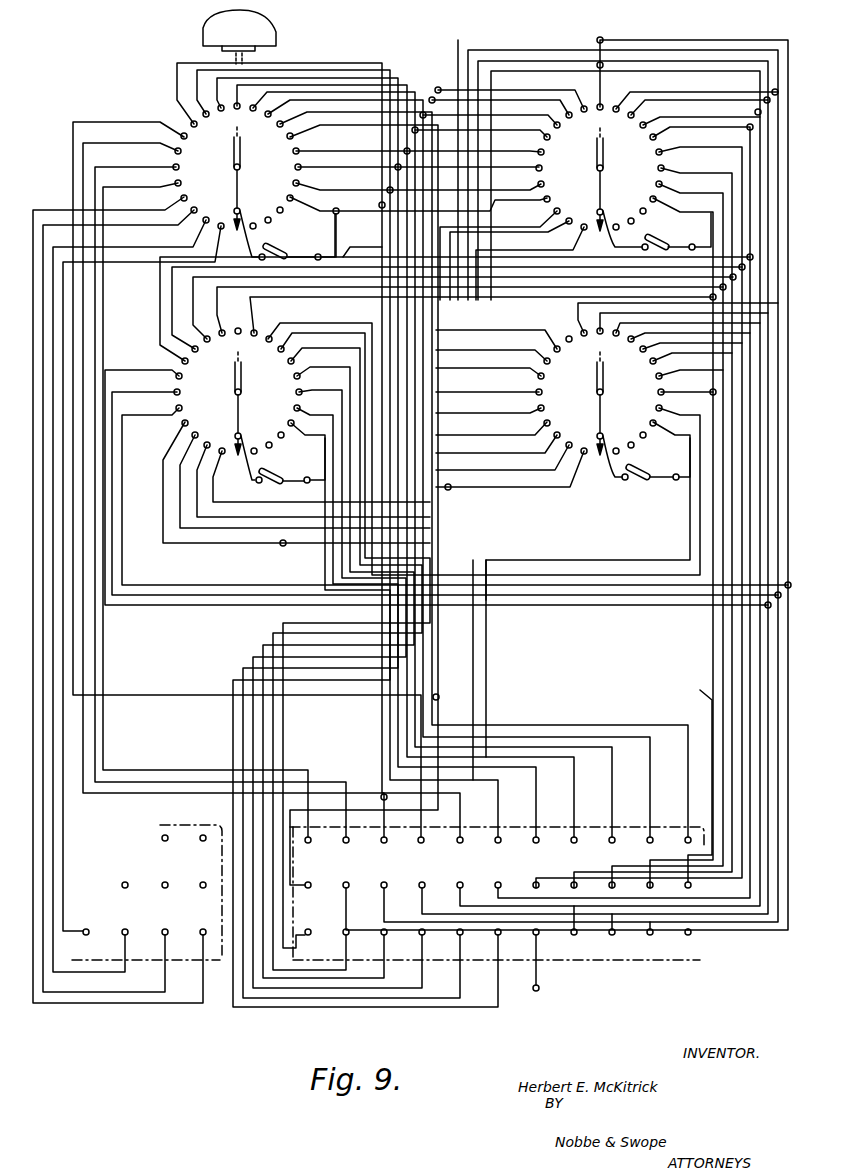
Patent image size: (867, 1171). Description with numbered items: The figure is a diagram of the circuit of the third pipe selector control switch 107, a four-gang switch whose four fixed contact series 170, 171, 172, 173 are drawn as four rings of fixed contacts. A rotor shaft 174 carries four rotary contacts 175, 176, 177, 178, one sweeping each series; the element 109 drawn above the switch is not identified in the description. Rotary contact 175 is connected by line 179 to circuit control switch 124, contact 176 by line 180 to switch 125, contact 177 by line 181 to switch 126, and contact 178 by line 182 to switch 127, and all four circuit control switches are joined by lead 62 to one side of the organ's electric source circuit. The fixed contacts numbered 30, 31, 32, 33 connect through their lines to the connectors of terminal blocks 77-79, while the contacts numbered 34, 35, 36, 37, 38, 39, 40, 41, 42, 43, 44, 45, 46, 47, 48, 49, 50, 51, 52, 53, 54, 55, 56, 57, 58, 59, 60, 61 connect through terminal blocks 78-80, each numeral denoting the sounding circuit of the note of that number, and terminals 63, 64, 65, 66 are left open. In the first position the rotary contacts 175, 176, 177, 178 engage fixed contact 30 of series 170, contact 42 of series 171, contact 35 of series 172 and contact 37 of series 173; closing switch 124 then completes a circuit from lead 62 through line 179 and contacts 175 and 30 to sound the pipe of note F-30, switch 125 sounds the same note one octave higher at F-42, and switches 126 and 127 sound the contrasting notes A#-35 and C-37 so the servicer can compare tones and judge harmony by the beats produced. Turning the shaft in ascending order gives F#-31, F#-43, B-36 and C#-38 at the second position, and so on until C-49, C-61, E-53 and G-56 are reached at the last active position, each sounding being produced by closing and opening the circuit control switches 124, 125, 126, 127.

The selector control switch 107 is at (160, 92).
The operating knob 109 is at (200, 30).
The circuit control switch 124 is at (278, 247).
The circuit control switch 125 is at (277, 471).
The circuit control switch 126 is at (664, 232).
The circuit control switch 127 is at (646, 458).
The fixed contact series 170 is at (222, 172).
The fixed contact series 171 is at (222, 397).
The fixed contact series 172 is at (582, 173).
The fixed contact series 173 is at (584, 397).
The rotor shaft 174 is at (240, 150).
The rotary contact 175 is at (240, 190).
The rotary contact 176 is at (241, 415).
The rotary contact 177 is at (603, 191).
The rotary contact 178 is at (603, 415).
The line 179 is at (246, 252).
The line 180 is at (246, 445).
The line 181 is at (608, 222).
The line 182 is at (607, 445).
The lead 62 is at (316, 252).
The fixed contact and sounding circuit 30 is at (58, 815).
The sounding circuit 31 is at (50, 836).
The sounding circuit 32 is at (42, 856).
The sounding circuit 33 is at (36, 874).
The sounding circuit 34 is at (118, 772).
The fixed contact and sounding circuit 35 is at (487, 700).
The sounding circuit 36 is at (120, 808).
The fixed contact and sounding circuit 37 is at (148, 700).
The sounding circuit 38 is at (358, 57).
The sounding circuit 39 is at (372, 467).
The sounding circuit 40 is at (377, 471).
The sounding circuit 41 is at (406, 472).
The fixed contact and sounding circuit 42 is at (415, 473).
The sounding circuit 43 is at (424, 477).
The sounding circuit 44 is at (547, 726).
The sounding circuit 45 is at (203, 553).
The sounding circuit 46 is at (740, 938).
The sounding circuit 47 is at (612, 622).
The sounding circuit 48 is at (645, 622).
The sounding circuit 49 is at (348, 222).
The sounding circuit 50 is at (715, 908).
The sounding circuit 51 is at (465, 524).
The sounding circuit 52 is at (470, 535).
The sounding circuit 53 is at (476, 545).
The sounding circuit 54 is at (494, 282).
The sounding circuit 55 is at (690, 655).
The sounding circuit 56 is at (547, 563).
The sounding circuit 57 is at (444, 540).
The sounding circuit 58 is at (338, 670).
The sounding circuit 59 is at (342, 686).
The sounding circuit 60 is at (356, 701).
The sounding circuit 61 is at (222, 720).
The open terminal 63 is at (575, 932).
The open terminal 64 is at (613, 936).
The open terminal 65 is at (651, 940).
The open terminal 66 is at (689, 943).
The terminal blocks 77-79 is at (192, 824).
The terminal blocks 78-80 is at (592, 962).